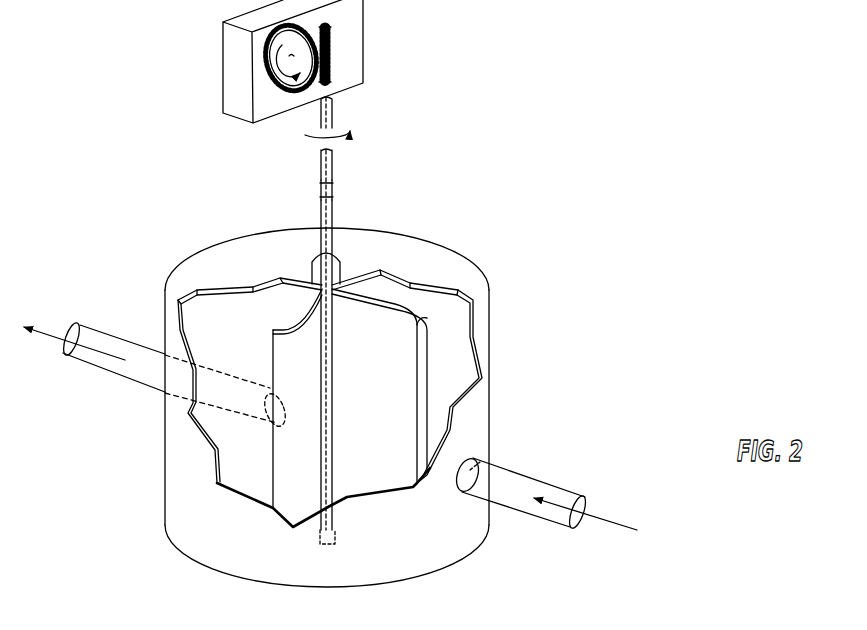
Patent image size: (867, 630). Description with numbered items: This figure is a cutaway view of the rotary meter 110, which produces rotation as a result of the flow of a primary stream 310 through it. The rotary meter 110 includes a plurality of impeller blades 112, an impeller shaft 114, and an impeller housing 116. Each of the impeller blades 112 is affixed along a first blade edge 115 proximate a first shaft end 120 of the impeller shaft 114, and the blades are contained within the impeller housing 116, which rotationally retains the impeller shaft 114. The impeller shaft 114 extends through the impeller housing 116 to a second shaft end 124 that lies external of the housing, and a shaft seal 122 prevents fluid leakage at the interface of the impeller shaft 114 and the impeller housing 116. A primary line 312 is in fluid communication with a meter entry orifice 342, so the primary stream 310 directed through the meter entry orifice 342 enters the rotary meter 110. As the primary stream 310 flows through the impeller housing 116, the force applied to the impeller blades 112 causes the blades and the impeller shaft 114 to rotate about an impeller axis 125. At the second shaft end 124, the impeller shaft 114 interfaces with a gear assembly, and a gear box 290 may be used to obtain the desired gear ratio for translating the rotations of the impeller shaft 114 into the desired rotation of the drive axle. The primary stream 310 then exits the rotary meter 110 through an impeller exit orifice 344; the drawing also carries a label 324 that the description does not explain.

The rotary meter 110 is at (443, 212).
The impeller blades 112 is at (307, 316).
The impeller shaft 114 is at (333, 182).
The first blade edge 115 is at (335, 427).
The impeller housing 116 is at (460, 278).
The first shaft end 120 is at (327, 547).
The shaft seal 122 is at (338, 257).
The second shaft end 124 is at (332, 80).
The impeller axis 125 is at (321, 191).
The gear box 290 is at (363, 37).
The primary stream 310 is at (55, 334).
The primary line 312 is at (528, 483).
The outlet 324 is at (666, 625).
The meter entry orifice 342 is at (477, 477).
The impeller exit orifice 344 is at (267, 400).